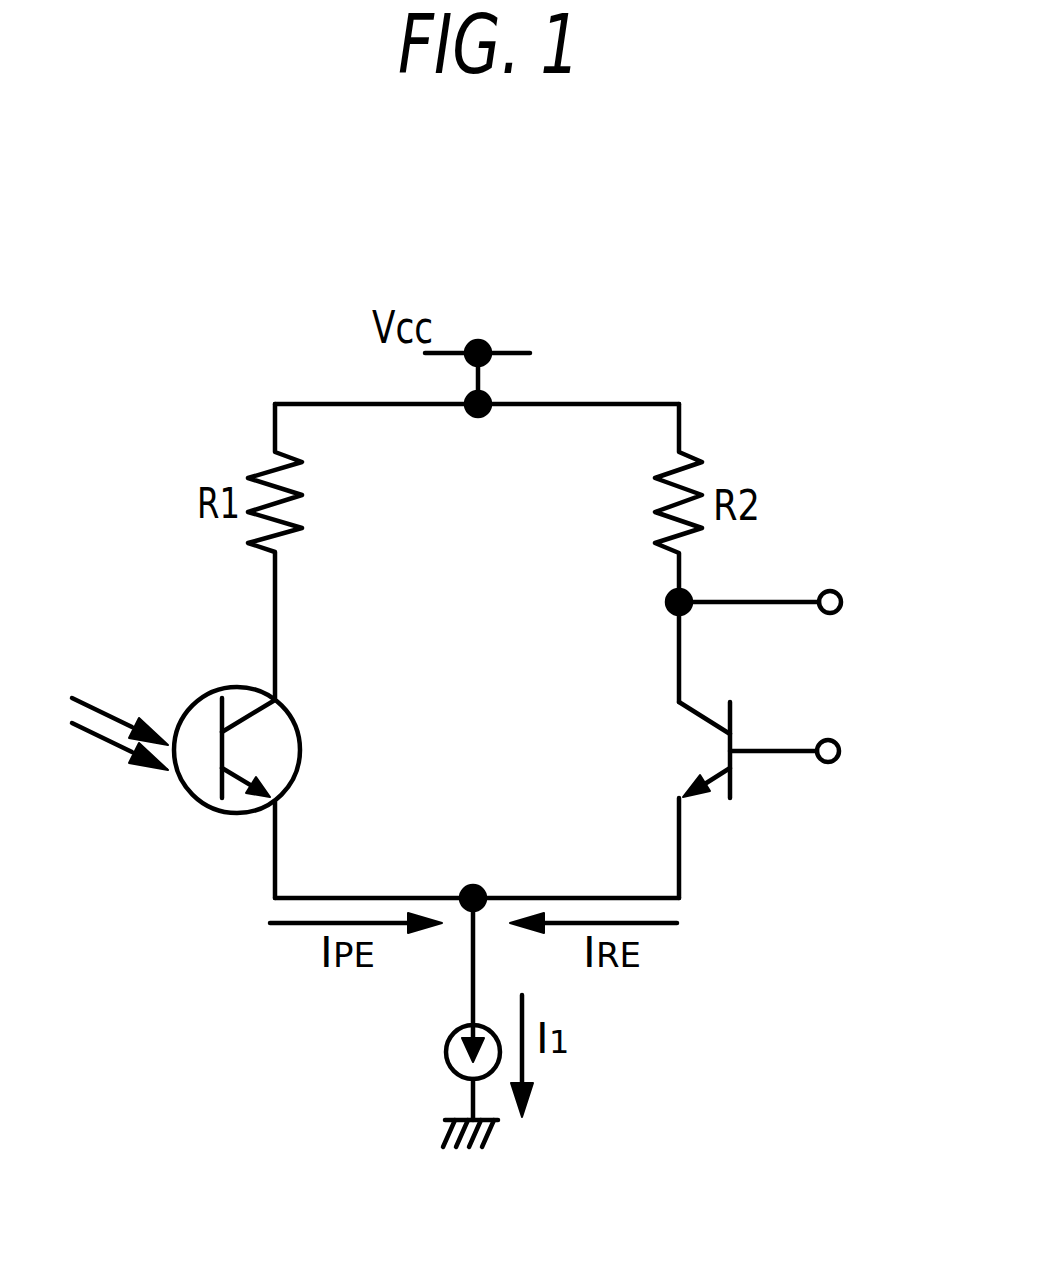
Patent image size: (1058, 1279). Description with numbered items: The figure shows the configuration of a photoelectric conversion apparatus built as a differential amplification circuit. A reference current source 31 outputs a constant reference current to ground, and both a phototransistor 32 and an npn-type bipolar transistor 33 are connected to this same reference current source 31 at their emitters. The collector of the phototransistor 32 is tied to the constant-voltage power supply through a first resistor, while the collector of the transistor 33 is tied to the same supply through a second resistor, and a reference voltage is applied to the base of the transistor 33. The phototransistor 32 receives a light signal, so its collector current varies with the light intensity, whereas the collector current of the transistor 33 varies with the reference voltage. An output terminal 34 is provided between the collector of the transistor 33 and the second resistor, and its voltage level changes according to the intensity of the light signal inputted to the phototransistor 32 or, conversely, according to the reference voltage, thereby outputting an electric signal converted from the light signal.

The reference current source 31 is at (447, 1047).
The phototransistor 32 is at (233, 688).
The npn-type bipolar transistor 33 is at (732, 796).
The output terminal 34 is at (834, 592).